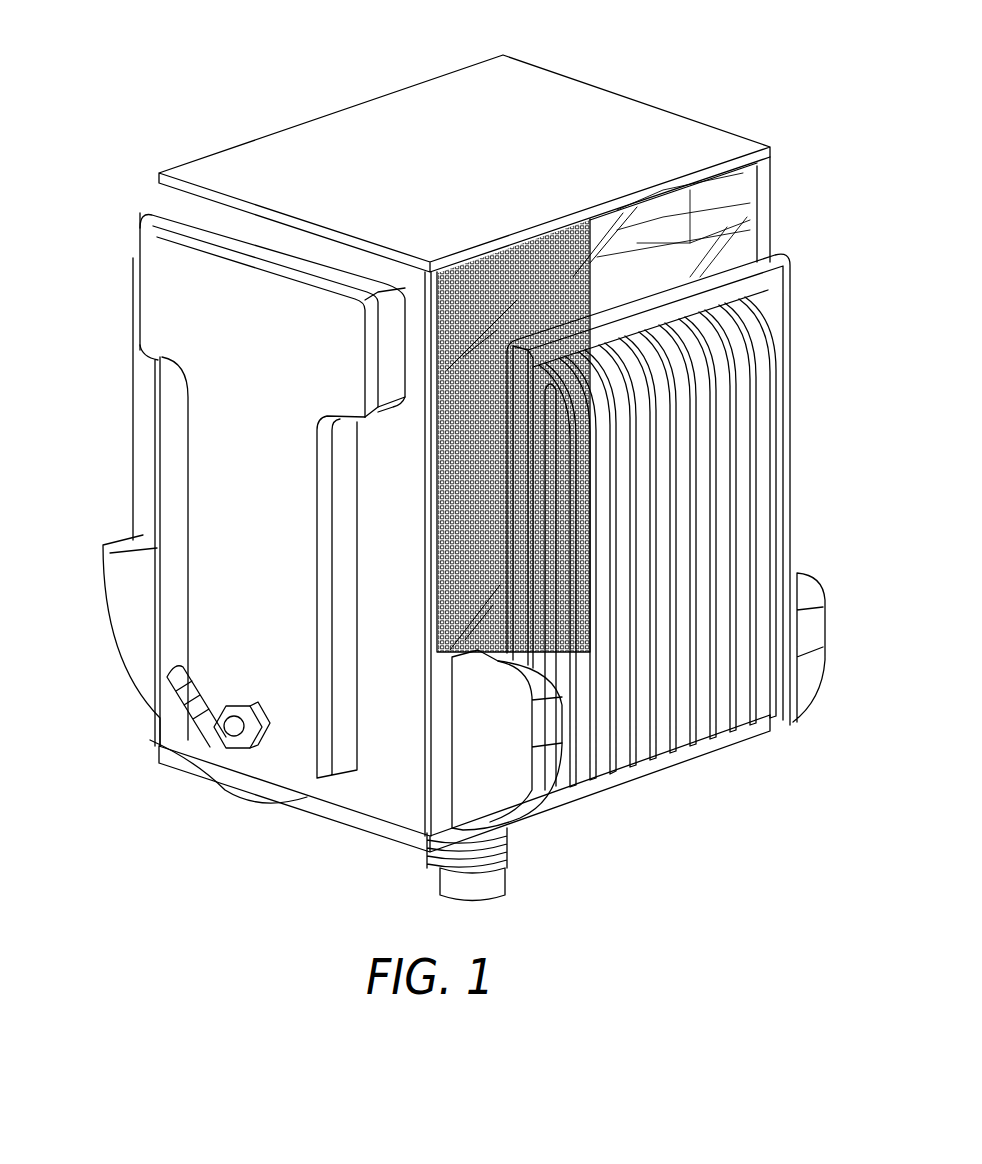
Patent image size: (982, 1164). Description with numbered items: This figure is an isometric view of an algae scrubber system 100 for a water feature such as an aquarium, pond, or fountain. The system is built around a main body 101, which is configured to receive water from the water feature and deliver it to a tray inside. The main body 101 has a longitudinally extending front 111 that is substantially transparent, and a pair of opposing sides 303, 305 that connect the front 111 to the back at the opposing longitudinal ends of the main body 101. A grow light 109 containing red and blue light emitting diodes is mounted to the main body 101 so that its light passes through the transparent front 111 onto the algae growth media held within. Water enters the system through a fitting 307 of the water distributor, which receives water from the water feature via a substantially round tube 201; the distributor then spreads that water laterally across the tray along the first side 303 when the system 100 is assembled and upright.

The algae scrubber system 100 is at (113, 91).
The main body 101 is at (420, 140).
The grow light 109 is at (776, 290).
The front 111 is at (650, 215).
The substantially round tube 201 is at (205, 725).
The first side 303 is at (165, 193).
The second side 305 is at (772, 178).
The fitting 307 is at (268, 742).